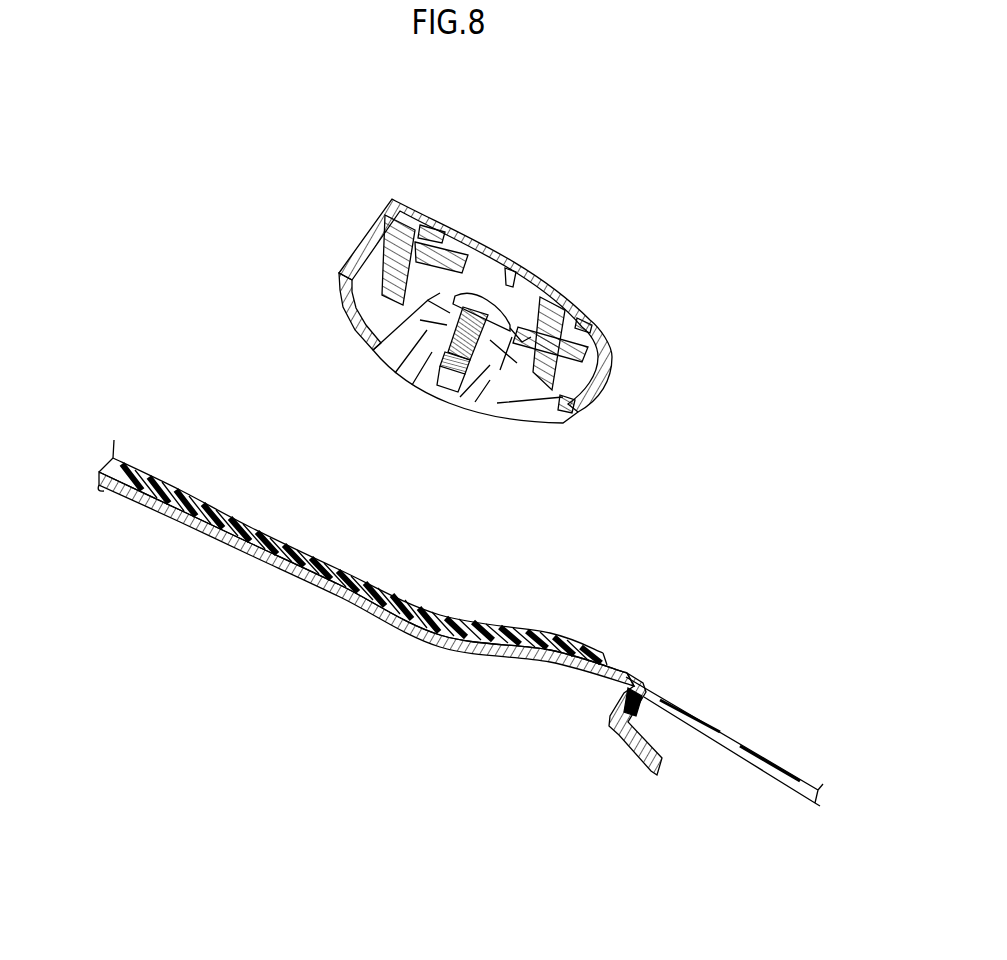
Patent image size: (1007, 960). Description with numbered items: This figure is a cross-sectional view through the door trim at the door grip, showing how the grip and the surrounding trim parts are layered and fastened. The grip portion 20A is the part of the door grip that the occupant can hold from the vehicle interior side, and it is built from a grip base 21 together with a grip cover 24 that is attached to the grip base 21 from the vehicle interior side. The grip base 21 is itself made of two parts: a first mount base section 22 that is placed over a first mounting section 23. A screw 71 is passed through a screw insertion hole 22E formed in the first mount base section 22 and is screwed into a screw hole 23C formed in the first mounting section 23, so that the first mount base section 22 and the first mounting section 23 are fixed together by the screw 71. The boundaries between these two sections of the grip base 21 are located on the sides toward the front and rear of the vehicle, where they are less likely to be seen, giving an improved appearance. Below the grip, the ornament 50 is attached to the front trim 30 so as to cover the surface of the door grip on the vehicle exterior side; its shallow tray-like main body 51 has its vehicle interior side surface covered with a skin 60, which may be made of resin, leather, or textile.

The grip portion 20A is at (302, 154).
The grip base 21 is at (715, 357).
The first mount base section 22 is at (611, 352).
The screw insertion hole 22E is at (478, 292).
The first mounting section 23 is at (560, 430).
The screw hole 23C is at (447, 387).
The grip cover 24 is at (543, 262).
The screw 71 is at (481, 297).
The skin 60 is at (152, 478).
The ornament 50 is at (140, 500).
The main body 51 is at (380, 623).
The front trim 30 is at (773, 763).